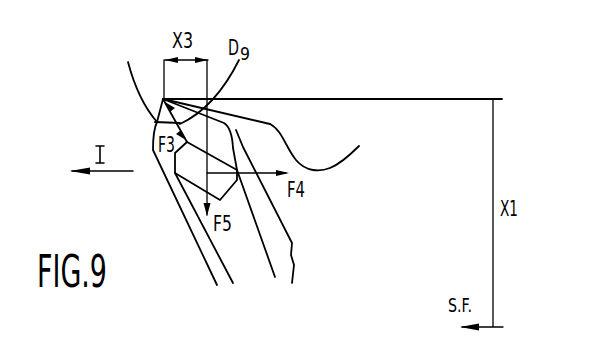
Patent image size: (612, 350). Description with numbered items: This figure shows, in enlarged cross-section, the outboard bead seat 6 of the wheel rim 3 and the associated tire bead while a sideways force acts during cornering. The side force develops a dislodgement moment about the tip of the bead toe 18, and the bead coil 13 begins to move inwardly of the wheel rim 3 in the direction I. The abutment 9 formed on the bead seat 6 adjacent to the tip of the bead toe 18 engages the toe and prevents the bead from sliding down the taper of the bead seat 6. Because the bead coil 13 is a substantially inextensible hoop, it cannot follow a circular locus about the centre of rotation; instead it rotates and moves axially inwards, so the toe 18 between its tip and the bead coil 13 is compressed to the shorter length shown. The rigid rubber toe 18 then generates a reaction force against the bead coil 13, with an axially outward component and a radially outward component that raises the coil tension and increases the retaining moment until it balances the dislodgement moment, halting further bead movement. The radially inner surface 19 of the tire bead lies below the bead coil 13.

The wheel rim 3 is at (366, 145).
The outboard bead seat 6 is at (243, 116).
The abutment 9 is at (147, 98).
The bead coil 13 is at (228, 191).
The bead toe 18 is at (155, 124).
The radially inner surface of the tire bead 19 is at (232, 143).